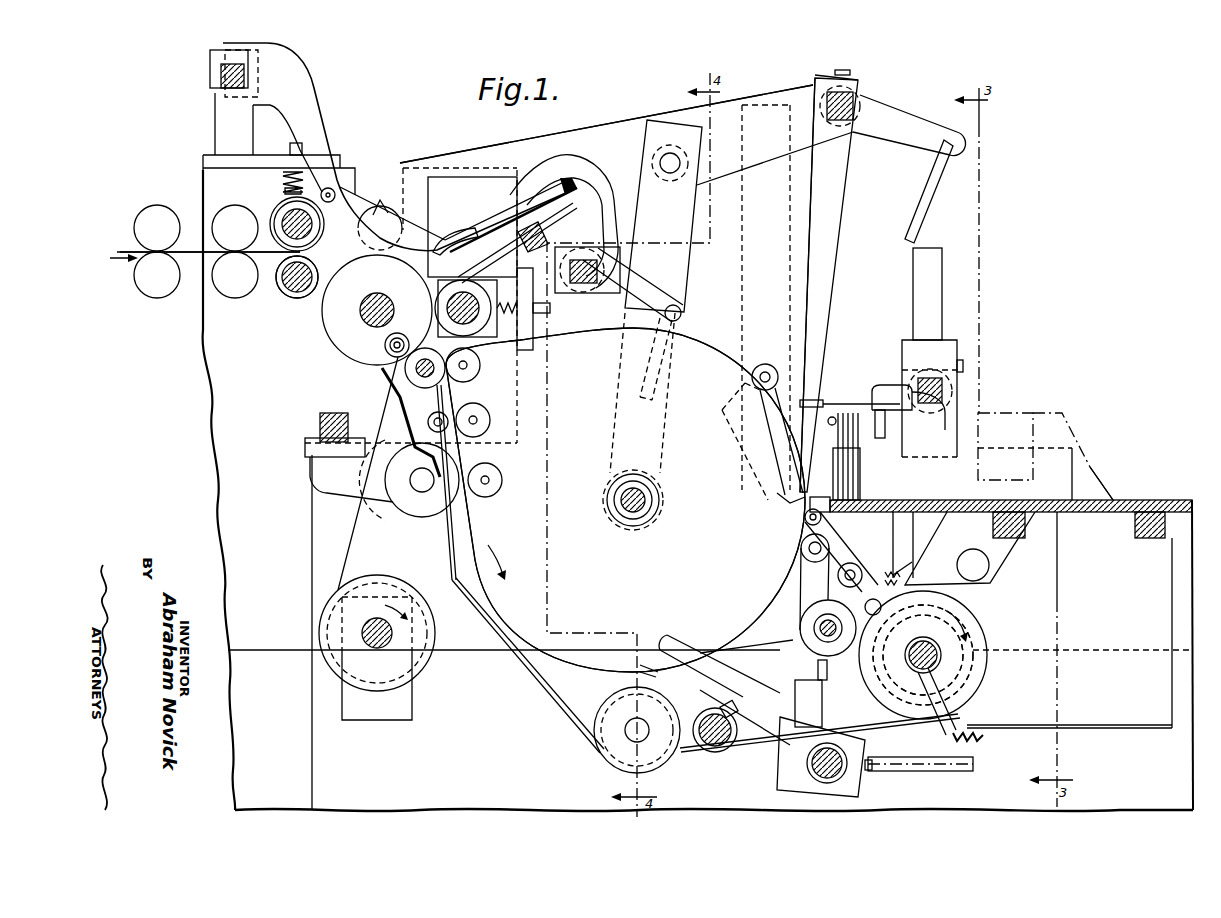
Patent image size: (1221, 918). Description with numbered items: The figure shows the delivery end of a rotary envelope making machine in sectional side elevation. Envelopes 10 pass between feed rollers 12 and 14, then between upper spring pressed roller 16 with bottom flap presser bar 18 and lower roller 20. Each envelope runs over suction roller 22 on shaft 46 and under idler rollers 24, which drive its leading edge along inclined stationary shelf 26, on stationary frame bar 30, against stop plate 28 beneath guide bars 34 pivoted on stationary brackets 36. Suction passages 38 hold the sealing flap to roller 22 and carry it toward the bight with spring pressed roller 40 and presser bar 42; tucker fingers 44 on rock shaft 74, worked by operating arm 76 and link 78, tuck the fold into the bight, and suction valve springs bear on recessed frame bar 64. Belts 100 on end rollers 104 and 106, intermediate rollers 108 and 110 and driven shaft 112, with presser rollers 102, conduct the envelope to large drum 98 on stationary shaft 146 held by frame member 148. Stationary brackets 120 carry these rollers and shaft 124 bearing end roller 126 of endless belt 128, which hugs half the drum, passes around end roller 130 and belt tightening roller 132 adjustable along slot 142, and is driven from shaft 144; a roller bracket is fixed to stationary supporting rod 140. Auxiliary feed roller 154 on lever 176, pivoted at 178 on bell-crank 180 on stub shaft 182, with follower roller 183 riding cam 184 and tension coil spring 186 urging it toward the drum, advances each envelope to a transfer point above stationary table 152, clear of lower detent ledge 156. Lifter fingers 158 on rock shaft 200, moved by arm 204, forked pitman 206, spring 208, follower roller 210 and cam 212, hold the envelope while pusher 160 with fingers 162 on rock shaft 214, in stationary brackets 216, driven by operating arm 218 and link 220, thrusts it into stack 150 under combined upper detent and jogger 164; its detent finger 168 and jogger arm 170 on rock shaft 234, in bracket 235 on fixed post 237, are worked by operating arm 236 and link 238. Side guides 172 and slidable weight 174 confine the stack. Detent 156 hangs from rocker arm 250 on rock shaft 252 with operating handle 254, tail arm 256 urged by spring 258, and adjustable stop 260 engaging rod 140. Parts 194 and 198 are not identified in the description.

The envelopes 10 is at (201, 262).
The feed rollers 12 is at (136, 215).
The feed rollers 14 is at (225, 205).
The upper spring pressed roller 16 is at (275, 208).
The bottom flap presser bar 18 is at (285, 283).
The lower roller 20 is at (296, 298).
The suction roller 22 is at (330, 338).
The idler rollers 24 is at (383, 205).
The upwardly inclined stationary shelf 26 is at (492, 257).
The stationary stop plate 28 is at (502, 232).
The stationary frame bar 30 is at (540, 228).
The guide bars 34 is at (463, 247).
The stationary brackets 36 is at (322, 83).
The suction passages 38 is at (385, 347).
The spring pressed roller 40 is at (505, 322).
The presser bar 42 is at (475, 330).
The tucker fingers 44 is at (475, 215).
The shaft 46 is at (377, 293).
The stationary recessed frame bar 64 is at (318, 420).
The rock shaft 74 is at (584, 285).
The operating arm 76 is at (647, 290).
The link 78 is at (645, 398).
The large drum 98 is at (510, 607).
The belts 100 is at (470, 545).
The presser rollers 102 is at (480, 420).
The end roller 104 is at (408, 375).
The end rollers 106 is at (385, 577).
The intermediate roller 108 is at (433, 413).
The intermediate roller 110 is at (430, 512).
The driven shaft 112 is at (377, 648).
The stationary brackets 120 is at (335, 483).
The shaft 124 is at (420, 478).
The end roller 126 is at (610, 757).
The endless belt 128 is at (513, 663).
The end roller 130 is at (800, 555).
The belt tightening roller 132 is at (815, 618).
The stationary supporting rod 140 is at (712, 750).
The slot 142 is at (828, 660).
The driven shaft 144 is at (413, 378).
The stationary shaft 146 is at (633, 513).
The frame member 148 is at (612, 436).
The stack 150 is at (848, 466).
The stationary table 152 is at (1065, 512).
The auxiliary feed roller 154 is at (804, 518).
The lower detent ledge 156 is at (814, 497).
The lifter fingers 158 is at (775, 488).
The pusher 160 is at (840, 260).
The pusher fingers 162 is at (813, 303).
The combined upper detent and jogger 164 is at (838, 397).
The detent finger 168 is at (831, 425).
The jogger arm 170 is at (853, 400).
The side guides 172 is at (1000, 452).
The slidable weight 174 is at (1090, 475).
The lever 176 is at (822, 530).
The pivot 178 is at (873, 573).
The bell-crank 180 is at (910, 575).
The stationary pivot or stub shaft 182 is at (978, 560).
The follower roller 183 is at (900, 580).
The cam 184 is at (987, 640).
The tension coil spring 186 is at (900, 575).
The cam track 194 is at (980, 678).
The link 198 is at (780, 655).
The rock shaft 200 is at (768, 362).
The arm 204 is at (730, 395).
The forked pitman 206 is at (950, 605).
The spring 208 is at (983, 753).
The follower roller 210 is at (873, 627).
The cam 212 is at (975, 655).
The rock shaft 214 is at (853, 110).
The stationary brackets 216 is at (790, 92).
The operating arm 218 is at (905, 140).
The link 220 is at (925, 213).
The rock shaft 234 is at (942, 390).
The bracket 235 is at (948, 345).
The operating arm 236 is at (905, 375).
The fixed post 237 is at (913, 284).
The link 238 is at (885, 428).
The rocker arm 250 is at (815, 690).
The rock shaft 252 is at (805, 770).
The operating handle 254 is at (935, 771).
The further arm 256 is at (693, 640).
The spring 258 is at (642, 663).
The adjustable stop 260 is at (756, 690).